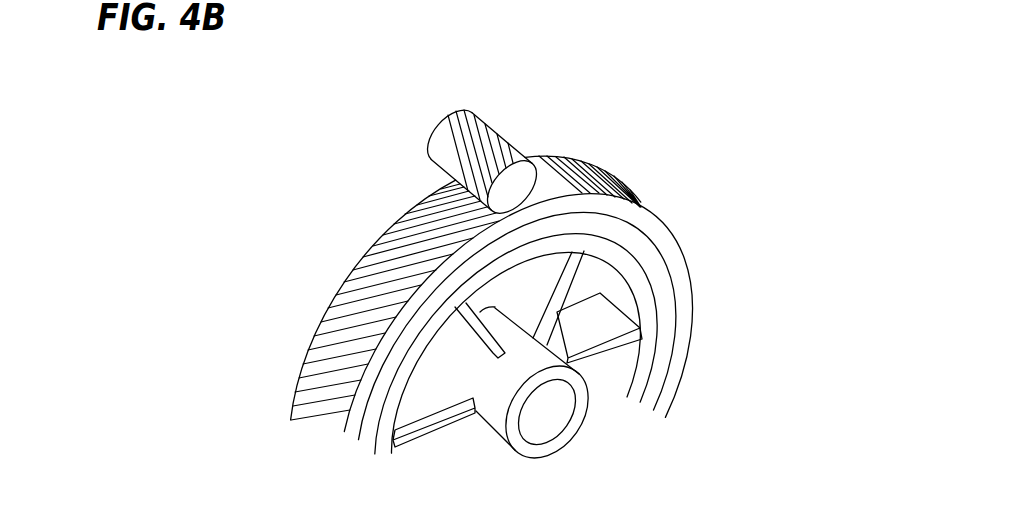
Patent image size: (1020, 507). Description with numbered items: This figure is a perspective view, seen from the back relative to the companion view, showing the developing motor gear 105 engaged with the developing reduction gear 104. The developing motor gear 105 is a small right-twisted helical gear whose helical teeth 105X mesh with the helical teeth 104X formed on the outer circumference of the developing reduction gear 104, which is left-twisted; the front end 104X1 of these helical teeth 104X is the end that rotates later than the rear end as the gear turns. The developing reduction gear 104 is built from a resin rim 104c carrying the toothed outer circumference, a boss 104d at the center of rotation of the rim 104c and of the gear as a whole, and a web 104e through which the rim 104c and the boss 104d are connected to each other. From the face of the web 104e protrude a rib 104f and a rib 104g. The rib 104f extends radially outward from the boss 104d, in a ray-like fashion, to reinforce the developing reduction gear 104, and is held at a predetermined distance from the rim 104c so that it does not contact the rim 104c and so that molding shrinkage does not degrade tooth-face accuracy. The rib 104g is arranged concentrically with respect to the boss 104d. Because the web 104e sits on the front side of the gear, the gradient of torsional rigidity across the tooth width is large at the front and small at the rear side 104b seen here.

The developing reduction gear 104 is at (397, 262).
The helical teeth 104X is at (363, 300).
The front end of helical teeth 104X1 is at (606, 4).
The rear side 104b is at (614, 204).
The rim 104c is at (664, 277).
The boss 104d is at (567, 433).
The web 104e is at (647, 238).
The rib 104f is at (593, 163).
The rib 104g is at (394, 365).
The developing motor gear 105 is at (435, 165).
The helical teeth 105X is at (470, 112).